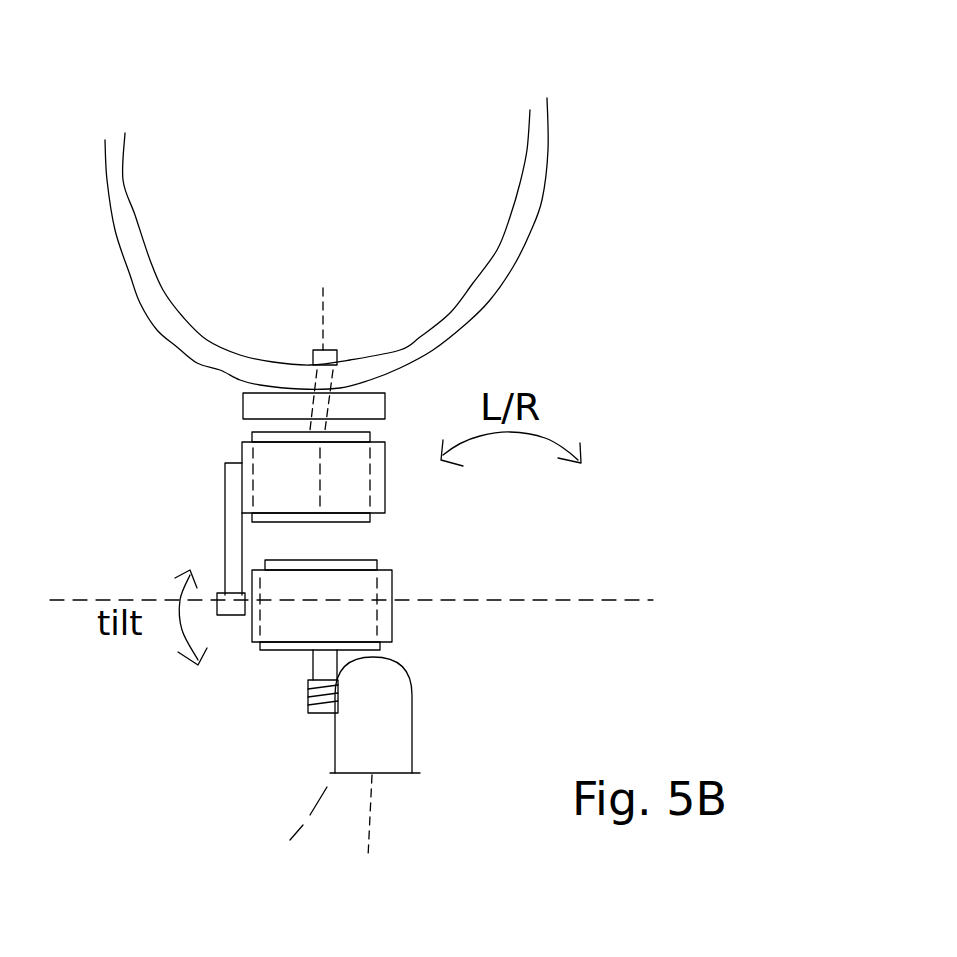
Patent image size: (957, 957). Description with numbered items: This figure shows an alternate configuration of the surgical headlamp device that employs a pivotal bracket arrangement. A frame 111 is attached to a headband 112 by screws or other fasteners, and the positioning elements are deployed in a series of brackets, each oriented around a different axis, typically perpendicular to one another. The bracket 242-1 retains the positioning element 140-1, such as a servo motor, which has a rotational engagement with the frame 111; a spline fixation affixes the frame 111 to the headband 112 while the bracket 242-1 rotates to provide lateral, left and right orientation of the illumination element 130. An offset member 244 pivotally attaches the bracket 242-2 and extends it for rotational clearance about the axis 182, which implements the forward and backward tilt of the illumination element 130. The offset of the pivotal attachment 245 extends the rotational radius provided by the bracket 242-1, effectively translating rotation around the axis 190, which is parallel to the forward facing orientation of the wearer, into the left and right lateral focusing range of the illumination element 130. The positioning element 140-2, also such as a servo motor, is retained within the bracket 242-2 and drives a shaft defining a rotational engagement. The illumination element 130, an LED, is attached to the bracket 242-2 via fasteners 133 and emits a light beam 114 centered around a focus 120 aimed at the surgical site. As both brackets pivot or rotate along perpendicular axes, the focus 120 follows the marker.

The headband 112 is at (545, 184).
The axis 190 is at (325, 303).
The frame 111 is at (385, 403).
The positioning element 140-1 is at (302, 522).
The bracket 242-1 is at (385, 505).
The positioning element 140-2 is at (373, 560).
The bracket 242-2 is at (392, 635).
The offset member 244 is at (225, 548).
The pivotal attachment 245 is at (215, 618).
The axis 182 is at (580, 597).
The fasteners 133 is at (312, 698).
The illumination element 130 is at (390, 728).
The light beam 114 is at (417, 778).
The focus 120 is at (452, 823).